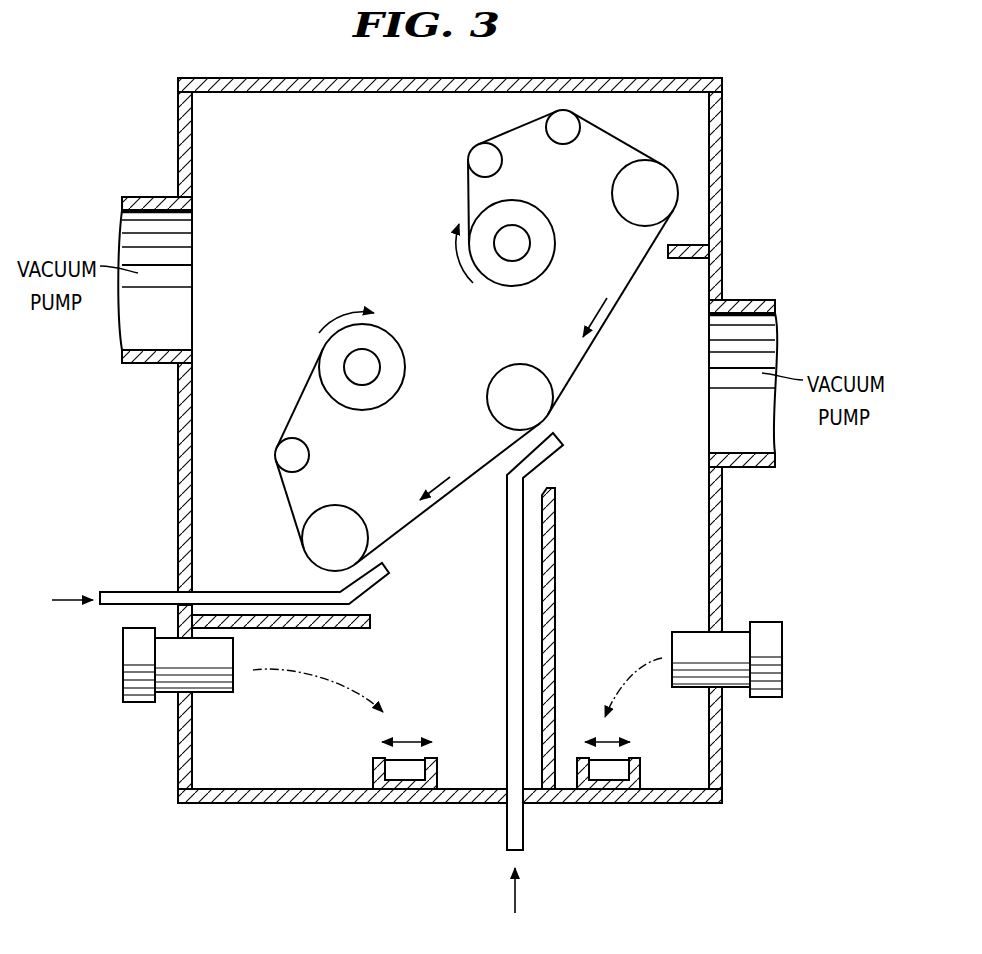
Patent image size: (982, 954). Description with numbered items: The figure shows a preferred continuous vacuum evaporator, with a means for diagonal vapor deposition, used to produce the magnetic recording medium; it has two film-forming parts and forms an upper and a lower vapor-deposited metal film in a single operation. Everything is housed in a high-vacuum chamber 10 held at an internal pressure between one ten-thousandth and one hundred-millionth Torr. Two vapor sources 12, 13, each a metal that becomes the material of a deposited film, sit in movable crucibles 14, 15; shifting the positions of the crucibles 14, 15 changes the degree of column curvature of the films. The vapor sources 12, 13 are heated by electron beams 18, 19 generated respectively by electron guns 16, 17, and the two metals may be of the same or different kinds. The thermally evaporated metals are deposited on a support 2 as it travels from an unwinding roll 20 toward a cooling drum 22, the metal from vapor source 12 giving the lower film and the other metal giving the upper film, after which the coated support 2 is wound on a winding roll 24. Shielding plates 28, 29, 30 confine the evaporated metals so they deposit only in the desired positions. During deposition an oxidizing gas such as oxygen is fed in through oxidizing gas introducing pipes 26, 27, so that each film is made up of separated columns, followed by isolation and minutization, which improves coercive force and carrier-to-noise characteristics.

The support 2 is at (628, 143).
The high-vacuum chamber 10 is at (340, 93).
The vapor source 12 is at (608, 780).
The vapor source 13 is at (404, 780).
The movable crucible 14 is at (638, 765).
The movable crucible 15 is at (375, 772).
The electron gun 16 is at (765, 698).
The electron gun 17 is at (137, 703).
The electron beam 18 is at (631, 672).
The electron beam 19 is at (327, 685).
The unwinding roll 20 is at (512, 274).
The cooling drum 22 is at (626, 216).
The winding roll 24 is at (385, 388).
The oxidizing gas introducing pipe 26 is at (507, 688).
The oxidizing gas introducing pipe 27 is at (258, 591).
The shielding plate 28 is at (557, 580).
The shielding plate 29 is at (372, 620).
The shielding plate 30 is at (688, 259).